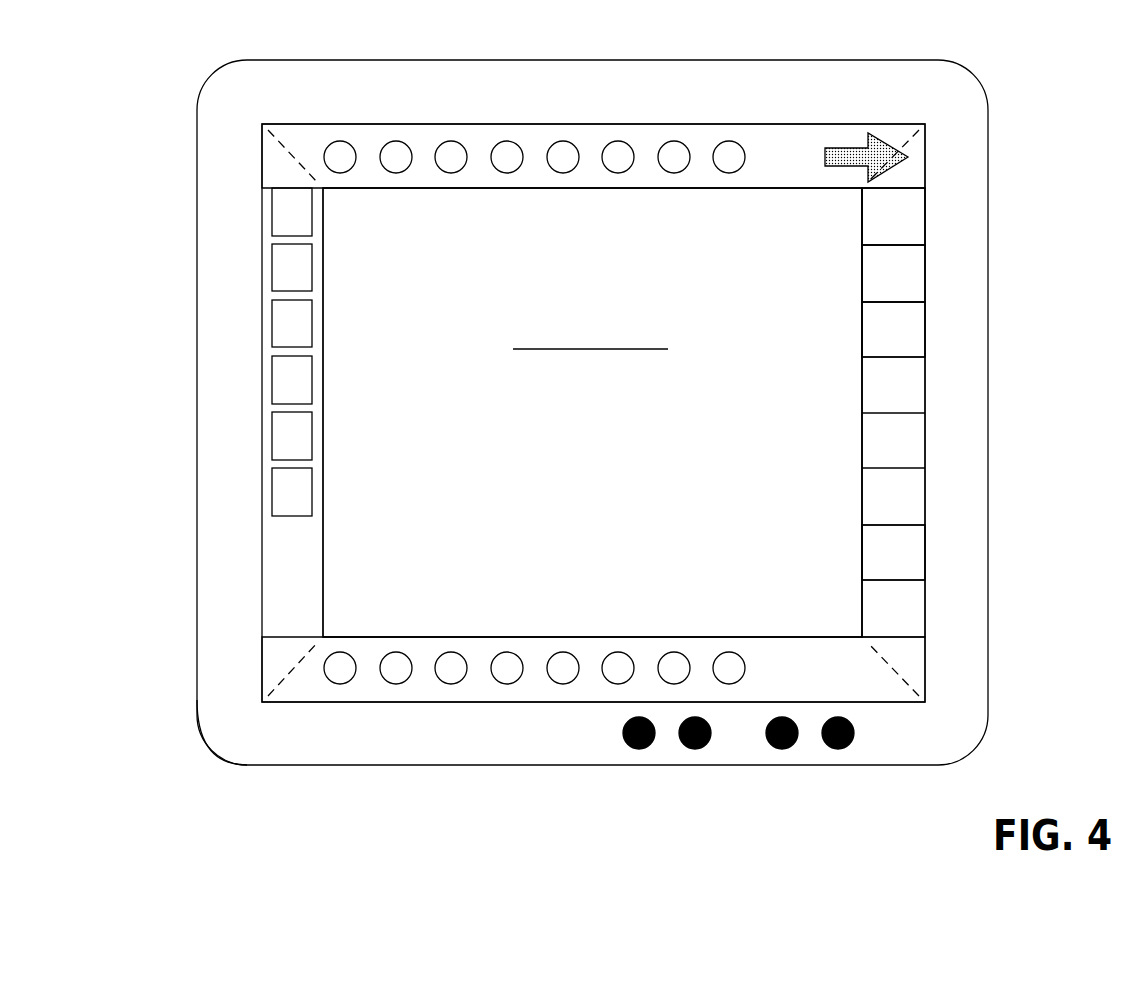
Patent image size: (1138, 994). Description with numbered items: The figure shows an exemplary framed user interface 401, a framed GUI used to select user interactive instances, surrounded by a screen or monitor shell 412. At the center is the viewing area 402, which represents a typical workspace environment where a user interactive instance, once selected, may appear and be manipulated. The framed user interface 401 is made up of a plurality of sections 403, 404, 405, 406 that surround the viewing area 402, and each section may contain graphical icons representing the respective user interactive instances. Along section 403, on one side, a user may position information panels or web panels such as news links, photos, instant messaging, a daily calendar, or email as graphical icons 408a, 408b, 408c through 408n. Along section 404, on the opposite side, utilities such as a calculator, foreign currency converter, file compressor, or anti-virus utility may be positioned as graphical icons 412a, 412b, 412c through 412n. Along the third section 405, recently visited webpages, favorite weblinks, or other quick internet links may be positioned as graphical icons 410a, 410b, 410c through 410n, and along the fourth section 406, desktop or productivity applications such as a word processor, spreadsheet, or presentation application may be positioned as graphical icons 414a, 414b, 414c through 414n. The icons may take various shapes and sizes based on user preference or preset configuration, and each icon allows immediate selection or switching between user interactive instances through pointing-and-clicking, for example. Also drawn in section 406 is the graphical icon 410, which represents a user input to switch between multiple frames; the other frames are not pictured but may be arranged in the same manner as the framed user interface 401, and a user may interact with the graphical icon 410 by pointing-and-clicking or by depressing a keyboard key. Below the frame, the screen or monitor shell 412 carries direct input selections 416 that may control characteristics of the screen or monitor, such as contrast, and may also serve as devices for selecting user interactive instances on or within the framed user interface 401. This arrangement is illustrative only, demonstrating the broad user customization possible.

The framed user interface 401 is at (238, 128).
The viewing area 402 is at (592, 412).
The section 403 is at (935, 440).
The section 404 is at (250, 411).
The third section 405 is at (542, 712).
The fourth section 406 is at (577, 116).
The graphical icon 408a is at (925, 220).
The graphical icon 408b is at (925, 282).
The graphical icon 408c is at (925, 330).
The graphical icon 408n is at (925, 558).
The graphical icon 410 is at (831, 149).
The graphical icon 410a is at (337, 685).
The graphical icon 410b is at (395, 685).
The graphical icon 410c is at (450, 685).
The graphical icon 410n is at (722, 652).
The screen or monitor shell 412 is at (233, 763).
The graphical icon 412a is at (272, 210).
The graphical icon 412b is at (272, 265).
The graphical icon 412c is at (272, 322).
The graphical icon 412n is at (272, 493).
The graphical icon 414a is at (328, 147).
The graphical icon 414b is at (387, 142).
The graphical icon 414c is at (459, 141).
The graphical icon 414n is at (722, 142).
The direct input selections 416 is at (782, 749).